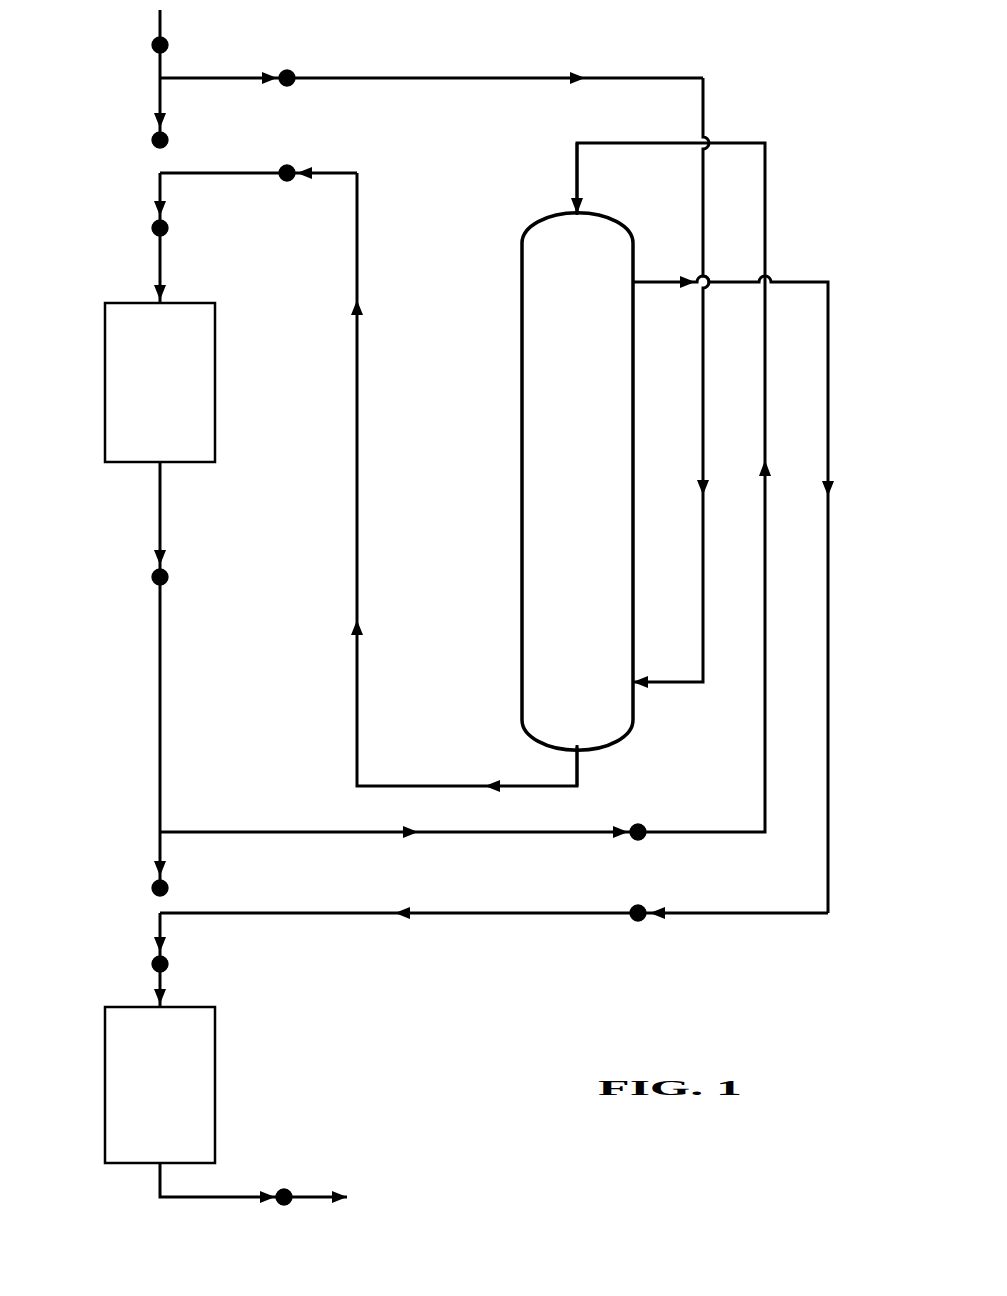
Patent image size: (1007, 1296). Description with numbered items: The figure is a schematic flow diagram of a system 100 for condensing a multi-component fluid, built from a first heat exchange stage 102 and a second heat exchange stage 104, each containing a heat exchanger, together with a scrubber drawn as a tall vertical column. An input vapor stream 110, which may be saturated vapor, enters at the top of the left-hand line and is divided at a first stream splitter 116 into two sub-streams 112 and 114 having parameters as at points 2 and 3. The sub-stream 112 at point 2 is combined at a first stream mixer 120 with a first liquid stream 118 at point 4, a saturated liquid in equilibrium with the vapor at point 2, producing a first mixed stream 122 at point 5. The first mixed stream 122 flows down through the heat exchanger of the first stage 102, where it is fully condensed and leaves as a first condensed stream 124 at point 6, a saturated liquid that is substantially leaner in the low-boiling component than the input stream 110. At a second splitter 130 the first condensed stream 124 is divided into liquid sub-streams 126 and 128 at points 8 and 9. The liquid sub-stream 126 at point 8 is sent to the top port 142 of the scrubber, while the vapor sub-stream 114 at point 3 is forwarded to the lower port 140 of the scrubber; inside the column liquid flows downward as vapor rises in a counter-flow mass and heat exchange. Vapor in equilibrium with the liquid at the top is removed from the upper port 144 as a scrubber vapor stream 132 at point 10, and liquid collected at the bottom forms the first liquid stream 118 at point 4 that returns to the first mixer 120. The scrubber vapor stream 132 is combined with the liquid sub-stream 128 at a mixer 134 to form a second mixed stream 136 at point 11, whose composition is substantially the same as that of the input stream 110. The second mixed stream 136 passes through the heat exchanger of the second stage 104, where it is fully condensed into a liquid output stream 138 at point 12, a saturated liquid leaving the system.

The system for condensing a multi-component fluid 100 is at (790, 111).
The first heat exchange stage 102 is at (242, 383).
The second heat exchange stage 104 is at (258, 1080).
The input vapor stream 110 is at (162, 27).
The vapor sub-stream 112 is at (163, 100).
The vapor sub-stream 114 is at (385, 82).
The first stream splitter 116 is at (158, 78).
The first liquid stream 118 is at (358, 208).
The first stream mixer 120 is at (158, 173).
The first mixed stream 122 is at (163, 190).
The first condensed stream 124 is at (162, 495).
The liquid sub-stream 126 is at (540, 833).
The liquid sub-stream 128 is at (163, 847).
The second splitter 130 is at (158, 832).
The scrubber vapor stream 132 is at (578, 747).
The mixer 134 is at (158, 913).
The second mixed stream 136 is at (163, 928).
The liquid output stream 138 is at (229, 1196).
The lower port 140 is at (633, 683).
The top port 142 is at (578, 215).
The upper port 144 is at (633, 283).
The point 2 is at (150, 141).
The point 3 is at (287, 91).
The point 4 is at (287, 187).
The point 5 is at (150, 229).
The point 6 is at (150, 578).
The point 8 is at (638, 820).
The point 9 is at (150, 889).
The point 10 is at (638, 901).
The point 11 is at (145, 965).
The point 12 is at (284, 1182).